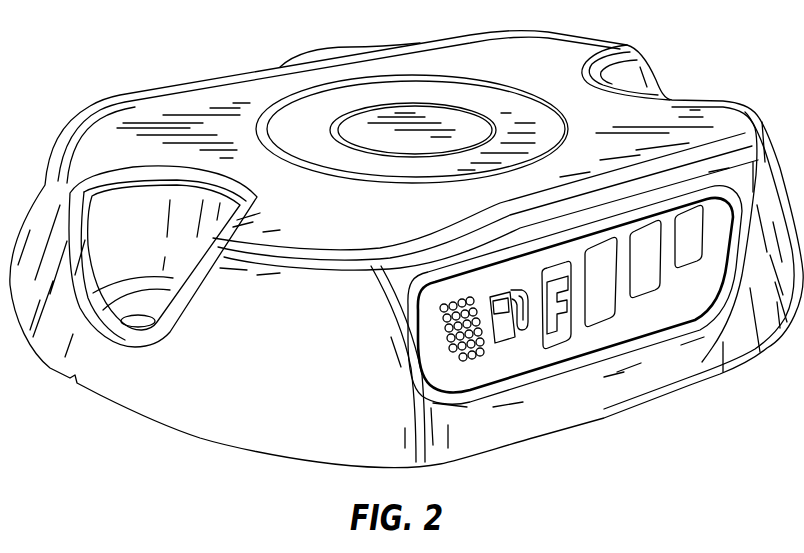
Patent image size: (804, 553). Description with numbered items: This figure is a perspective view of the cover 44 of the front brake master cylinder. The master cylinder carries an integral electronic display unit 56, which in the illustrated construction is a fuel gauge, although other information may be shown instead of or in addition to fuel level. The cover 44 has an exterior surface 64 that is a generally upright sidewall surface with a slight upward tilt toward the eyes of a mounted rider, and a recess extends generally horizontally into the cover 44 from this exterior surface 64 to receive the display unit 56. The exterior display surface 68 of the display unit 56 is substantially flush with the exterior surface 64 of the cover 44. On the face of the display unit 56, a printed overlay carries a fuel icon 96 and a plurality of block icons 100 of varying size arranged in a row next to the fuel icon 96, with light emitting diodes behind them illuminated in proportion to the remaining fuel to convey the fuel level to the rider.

The cover 44 is at (137, 72).
The exterior surface 64 is at (411, 279).
The electronic display unit 56 is at (478, 368).
The fuel icon 96 is at (505, 335).
The exterior display surface 68 is at (592, 329).
The block icons 100 is at (570, 307).